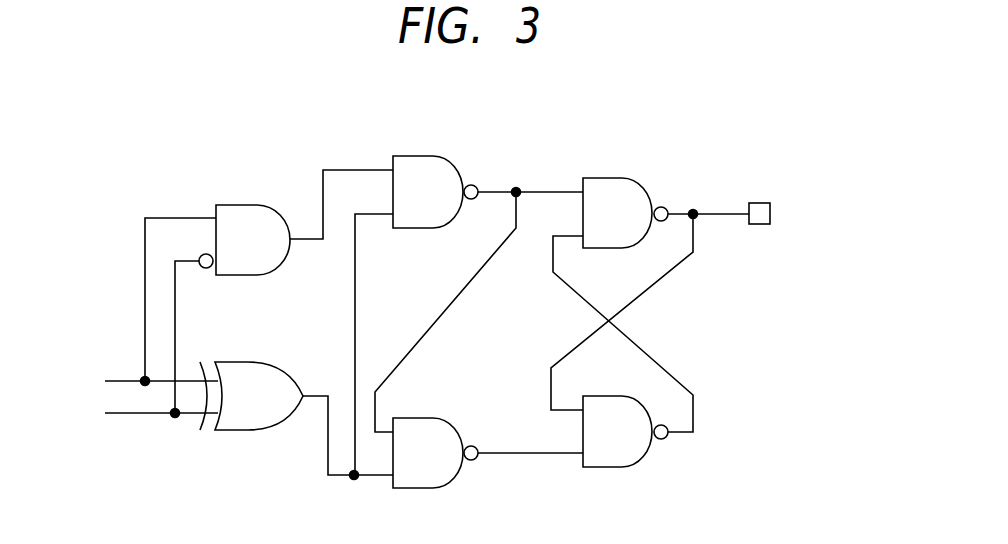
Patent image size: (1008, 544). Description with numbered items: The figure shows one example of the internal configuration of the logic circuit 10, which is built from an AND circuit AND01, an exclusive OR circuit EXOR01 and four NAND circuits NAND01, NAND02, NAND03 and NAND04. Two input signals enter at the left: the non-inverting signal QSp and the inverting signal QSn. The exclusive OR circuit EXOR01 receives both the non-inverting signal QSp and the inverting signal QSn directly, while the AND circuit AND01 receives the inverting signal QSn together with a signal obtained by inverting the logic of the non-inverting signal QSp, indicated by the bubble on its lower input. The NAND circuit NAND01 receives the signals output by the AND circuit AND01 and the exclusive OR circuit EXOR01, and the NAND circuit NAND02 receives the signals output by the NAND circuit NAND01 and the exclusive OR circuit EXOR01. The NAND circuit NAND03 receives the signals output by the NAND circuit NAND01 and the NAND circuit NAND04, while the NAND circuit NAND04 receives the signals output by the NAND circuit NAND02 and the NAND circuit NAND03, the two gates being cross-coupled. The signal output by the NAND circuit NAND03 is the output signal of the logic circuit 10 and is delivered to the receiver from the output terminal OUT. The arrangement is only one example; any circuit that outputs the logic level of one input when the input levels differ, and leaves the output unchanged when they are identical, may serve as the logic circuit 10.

The logic circuit 10 is at (868, 72).
The AND circuit AND01 is at (296, 222).
The exclusive OR circuit EXOR01 is at (296, 421).
The NAND circuit NAND01 is at (469, 299).
The NAND circuit NAND02 is at (481, 471).
The NAND circuit NAND03 is at (650, 279).
The NAND circuit NAND04 is at (623, 369).
The non-inverting signal QSp is at (137, 305).
The inverting signal QSn is at (137, 343).
The output terminal OUT is at (788, 215).